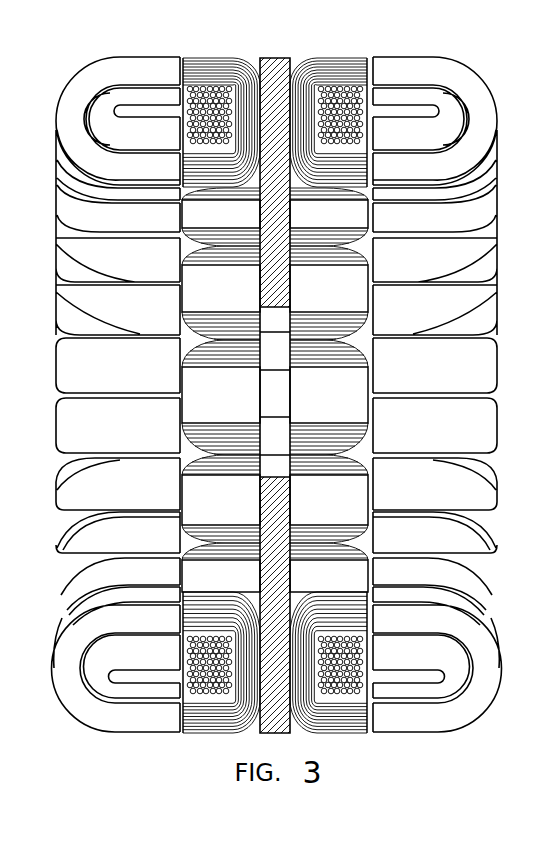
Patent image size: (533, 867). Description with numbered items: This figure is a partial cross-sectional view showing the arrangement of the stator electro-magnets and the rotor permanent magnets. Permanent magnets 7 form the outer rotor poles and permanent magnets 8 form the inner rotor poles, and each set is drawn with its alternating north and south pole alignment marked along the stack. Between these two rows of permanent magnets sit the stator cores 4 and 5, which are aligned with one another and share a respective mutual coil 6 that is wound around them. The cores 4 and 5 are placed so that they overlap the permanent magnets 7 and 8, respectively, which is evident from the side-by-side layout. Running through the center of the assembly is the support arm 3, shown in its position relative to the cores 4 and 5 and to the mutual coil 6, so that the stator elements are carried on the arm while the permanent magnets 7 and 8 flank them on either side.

The support arm 3 is at (271, 66).
The core 4 is at (212, 224).
The core 5 is at (332, 224).
The mutual coil 6 is at (189, 93).
The permanent magnets 7 is at (145, 62).
The permanent magnets 8 is at (433, 66).